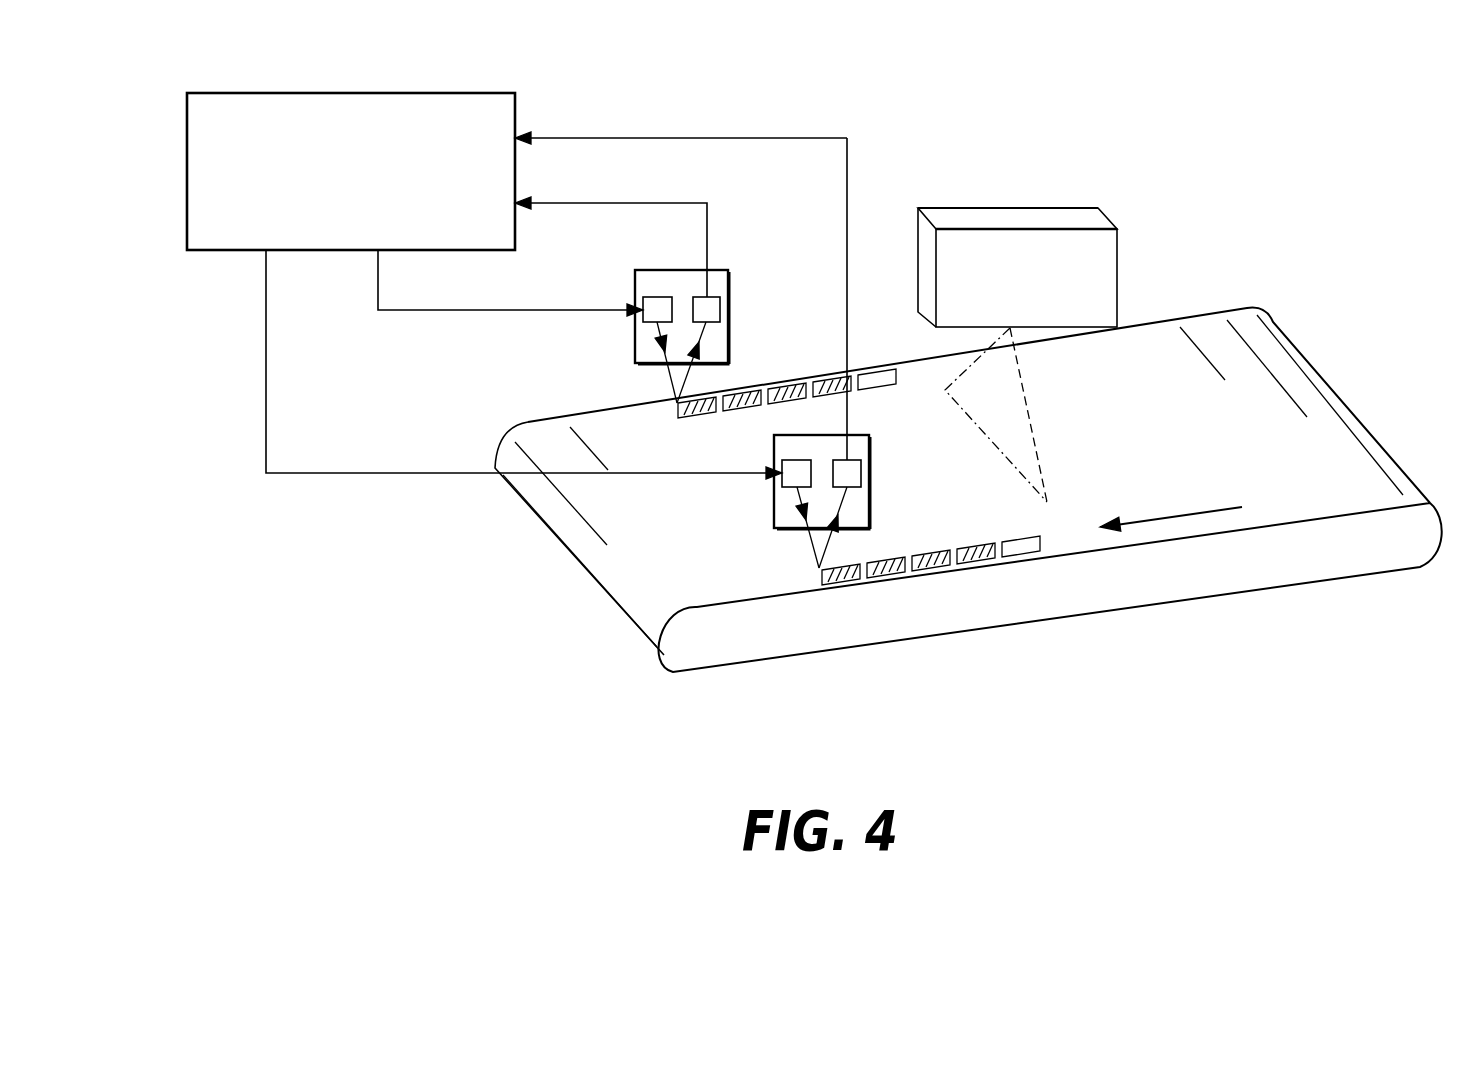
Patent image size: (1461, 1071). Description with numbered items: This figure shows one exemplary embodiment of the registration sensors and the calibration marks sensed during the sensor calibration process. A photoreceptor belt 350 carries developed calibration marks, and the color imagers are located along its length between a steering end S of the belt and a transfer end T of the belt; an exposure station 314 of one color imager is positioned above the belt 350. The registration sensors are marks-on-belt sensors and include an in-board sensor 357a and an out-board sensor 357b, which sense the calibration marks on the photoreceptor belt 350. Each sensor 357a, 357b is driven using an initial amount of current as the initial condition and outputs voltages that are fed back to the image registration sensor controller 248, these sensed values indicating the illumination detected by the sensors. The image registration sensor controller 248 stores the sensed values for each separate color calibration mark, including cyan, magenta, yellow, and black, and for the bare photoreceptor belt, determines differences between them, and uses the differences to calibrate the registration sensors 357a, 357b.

The image registration sensor controller 248 is at (515, 97).
The in-board sensor 357a is at (713, 280).
The out-board sensor 357b is at (862, 452).
The exposure station 314 is at (1097, 275).
The photoreceptor belt 350 is at (1287, 368).
The steering end S is at (1377, 478).
The transfer end T is at (552, 515).